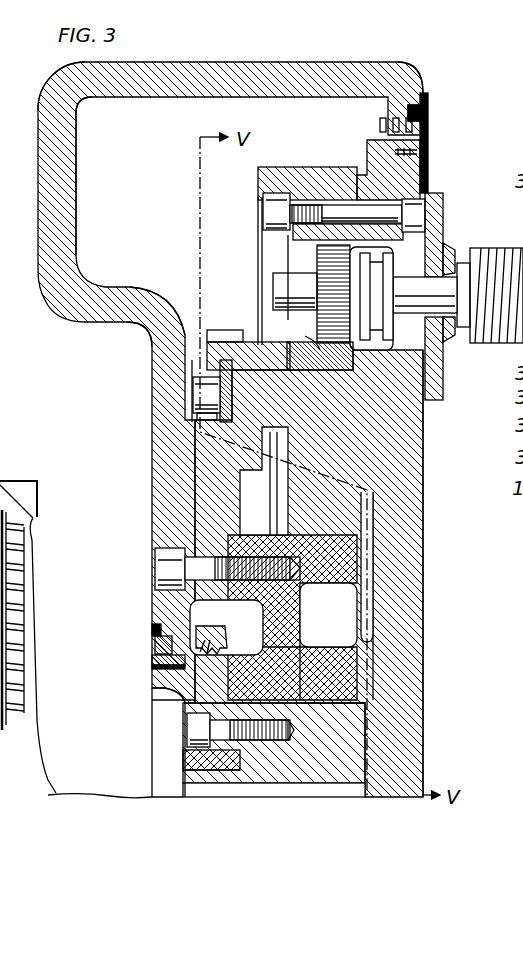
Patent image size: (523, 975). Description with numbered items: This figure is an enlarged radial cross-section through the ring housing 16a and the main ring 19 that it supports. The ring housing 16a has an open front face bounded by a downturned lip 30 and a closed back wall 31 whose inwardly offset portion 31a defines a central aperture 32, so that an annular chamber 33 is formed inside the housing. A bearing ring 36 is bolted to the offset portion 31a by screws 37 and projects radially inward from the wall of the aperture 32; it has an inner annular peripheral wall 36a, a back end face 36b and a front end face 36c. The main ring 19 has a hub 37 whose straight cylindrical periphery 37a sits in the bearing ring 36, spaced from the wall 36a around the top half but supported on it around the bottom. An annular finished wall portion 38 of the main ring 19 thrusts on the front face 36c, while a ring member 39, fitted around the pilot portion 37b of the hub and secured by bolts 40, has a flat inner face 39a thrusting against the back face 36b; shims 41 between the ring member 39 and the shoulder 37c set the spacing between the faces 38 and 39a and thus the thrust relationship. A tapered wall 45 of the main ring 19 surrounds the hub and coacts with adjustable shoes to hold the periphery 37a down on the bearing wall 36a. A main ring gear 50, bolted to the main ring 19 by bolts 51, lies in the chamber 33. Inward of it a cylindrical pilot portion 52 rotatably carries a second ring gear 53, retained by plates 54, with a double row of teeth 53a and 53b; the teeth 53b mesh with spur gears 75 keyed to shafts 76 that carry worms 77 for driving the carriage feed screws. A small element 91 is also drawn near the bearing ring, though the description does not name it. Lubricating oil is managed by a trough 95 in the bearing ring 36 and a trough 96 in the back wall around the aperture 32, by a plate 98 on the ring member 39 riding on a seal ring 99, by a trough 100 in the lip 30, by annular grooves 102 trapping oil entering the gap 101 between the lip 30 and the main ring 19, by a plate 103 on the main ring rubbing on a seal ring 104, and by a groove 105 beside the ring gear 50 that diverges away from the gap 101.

The ring housing 16a is at (68, 70).
The main ring 19 is at (412, 480).
The downturned lip 30 is at (412, 93).
The closed back wall 31 is at (65, 218).
The inwardly offset portion 31a is at (172, 342).
The central aperture 32 is at (160, 654).
The annular chamber 33 is at (112, 165).
The bearing ring 36 is at (298, 535).
The inner annular peripheral wall 36a is at (300, 698).
The back end face 36b is at (250, 660).
The front end face 36c is at (357, 640).
The hub 37 is at (168, 560).
The cylindrical peripheral portion 37a is at (360, 718).
The pilot portion 37b is at (185, 766).
The shoulder 37c is at (274, 789).
The annular finished wall portion 38 is at (365, 682).
The ring member 39 is at (185, 708).
The flat inner face 39a is at (158, 689).
The bolts 40 is at (192, 732).
The shims 41 is at (190, 768).
The tapered wall 45 is at (312, 467).
The main ring gear 50 is at (287, 167).
The bolts 51 is at (380, 210).
The pilot portion 52 is at (285, 368).
The second ring gear 53 is at (220, 366).
The row of teeth 53a is at (224, 326).
The row of teeth 53b is at (309, 332).
The plates 54 is at (207, 374).
The spur gears 75 is at (320, 253).
The shafts 76 is at (280, 286).
The worms 77 is at (478, 256).
The pawl 91 is at (214, 636).
The trough 95 is at (290, 612).
The trough 96 is at (198, 638).
The plate 98 is at (160, 641).
The seal ring 99 is at (152, 628).
The trough 100 is at (383, 122).
The gap 101 is at (426, 130).
The annular grooves 102 is at (426, 147).
The plate 103 is at (425, 112).
The seal ring 104 is at (421, 100).
The groove 105 is at (370, 165).